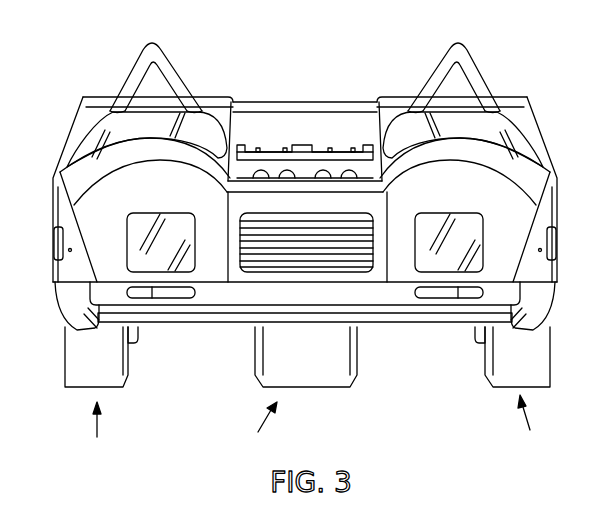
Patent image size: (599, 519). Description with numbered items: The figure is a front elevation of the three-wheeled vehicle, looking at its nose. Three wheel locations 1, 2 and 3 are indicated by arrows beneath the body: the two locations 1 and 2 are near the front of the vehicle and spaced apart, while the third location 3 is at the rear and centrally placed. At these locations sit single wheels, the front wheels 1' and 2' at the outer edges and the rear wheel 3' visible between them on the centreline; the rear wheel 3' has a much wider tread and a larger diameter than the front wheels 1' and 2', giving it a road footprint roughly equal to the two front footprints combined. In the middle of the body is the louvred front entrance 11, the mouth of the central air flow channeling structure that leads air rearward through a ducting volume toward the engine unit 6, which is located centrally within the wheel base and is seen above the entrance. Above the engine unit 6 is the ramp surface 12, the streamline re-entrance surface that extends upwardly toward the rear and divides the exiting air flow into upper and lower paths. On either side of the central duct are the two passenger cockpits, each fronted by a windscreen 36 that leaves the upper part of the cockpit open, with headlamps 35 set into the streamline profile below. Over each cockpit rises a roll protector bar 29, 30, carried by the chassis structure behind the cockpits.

The roll protector bar 29 is at (152, 53).
The roll protector bar 30 is at (463, 55).
The ramp surface 12 is at (268, 122).
The engine unit 6 is at (320, 163).
The windscreen 36 is at (82, 147).
The headlamp 35 is at (148, 237).
The louvred front entrance 11 is at (284, 252).
The front wheel 1' is at (83, 360).
The front wheel 2' is at (533, 357).
The rear wheel 3' is at (325, 358).
The wheel location 1 is at (96, 436).
The wheel location 2 is at (530, 424).
The wheel location 3 is at (259, 428).